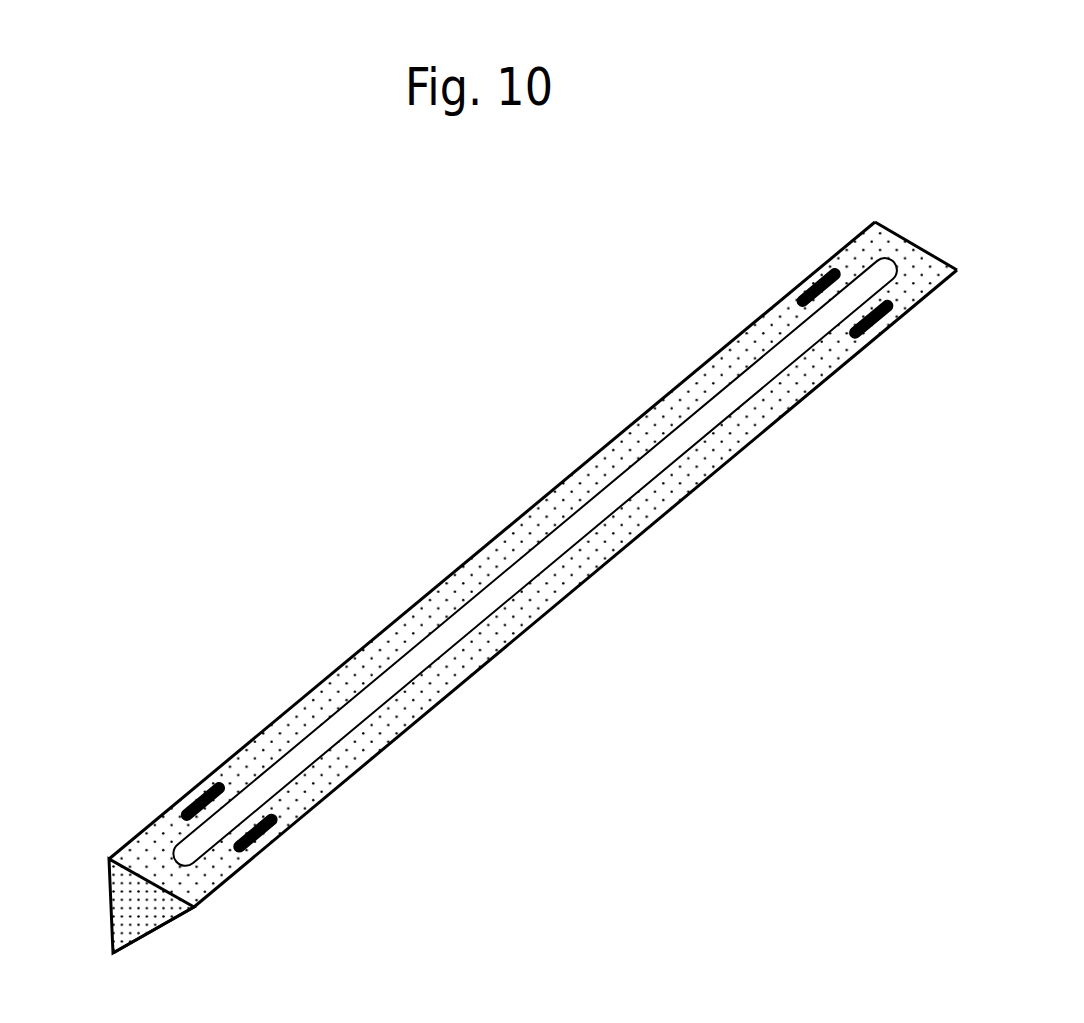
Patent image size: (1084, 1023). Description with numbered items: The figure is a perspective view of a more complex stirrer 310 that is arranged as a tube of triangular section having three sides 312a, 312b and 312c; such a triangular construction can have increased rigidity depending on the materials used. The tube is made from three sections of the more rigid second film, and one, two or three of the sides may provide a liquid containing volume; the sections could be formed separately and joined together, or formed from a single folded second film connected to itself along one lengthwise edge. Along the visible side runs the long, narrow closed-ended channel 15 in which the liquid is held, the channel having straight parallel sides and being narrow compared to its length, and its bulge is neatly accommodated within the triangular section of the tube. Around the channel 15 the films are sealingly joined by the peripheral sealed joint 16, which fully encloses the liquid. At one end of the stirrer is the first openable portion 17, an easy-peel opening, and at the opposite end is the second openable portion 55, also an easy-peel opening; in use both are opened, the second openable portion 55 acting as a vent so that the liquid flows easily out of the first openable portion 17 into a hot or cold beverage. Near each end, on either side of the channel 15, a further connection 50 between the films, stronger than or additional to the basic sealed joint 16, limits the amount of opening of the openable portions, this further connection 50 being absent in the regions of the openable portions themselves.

The stirrer 310 is at (500, 572).
The channel 15 is at (536, 584).
The sealed joint 16 is at (413, 630).
The first openable portion 17 is at (270, 906).
The further connection 50 is at (757, 289).
The second openable portion 55 is at (830, 226).
The side 312a is at (295, 803).
The side 312b is at (165, 925).
The side 312c is at (108, 895).